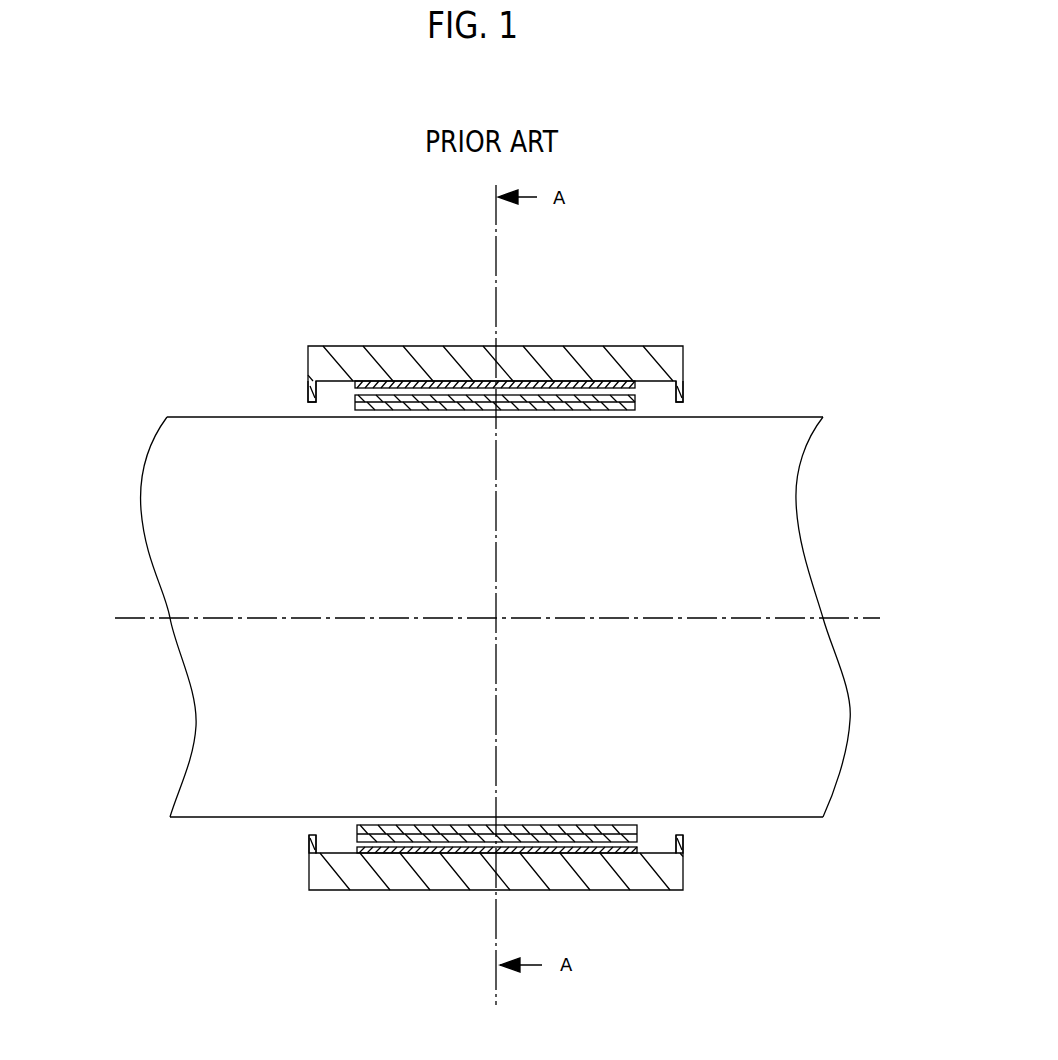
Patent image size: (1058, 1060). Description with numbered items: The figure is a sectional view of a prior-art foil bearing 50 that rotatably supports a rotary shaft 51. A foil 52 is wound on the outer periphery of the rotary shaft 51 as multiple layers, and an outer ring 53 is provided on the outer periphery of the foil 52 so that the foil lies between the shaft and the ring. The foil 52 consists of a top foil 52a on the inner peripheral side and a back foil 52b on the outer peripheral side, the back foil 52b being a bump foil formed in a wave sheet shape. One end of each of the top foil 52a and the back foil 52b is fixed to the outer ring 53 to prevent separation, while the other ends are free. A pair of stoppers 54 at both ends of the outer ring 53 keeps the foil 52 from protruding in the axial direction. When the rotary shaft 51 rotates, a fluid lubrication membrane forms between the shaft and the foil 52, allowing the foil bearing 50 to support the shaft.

The foil bearing 50 is at (473, 556).
The rotary shaft 51 is at (158, 505).
The foil 52 is at (496, 555).
The top foil 52a is at (608, 411).
The back foil 52b is at (597, 381).
The outer ring 53 is at (418, 363).
The stoppers 54 is at (308, 392).